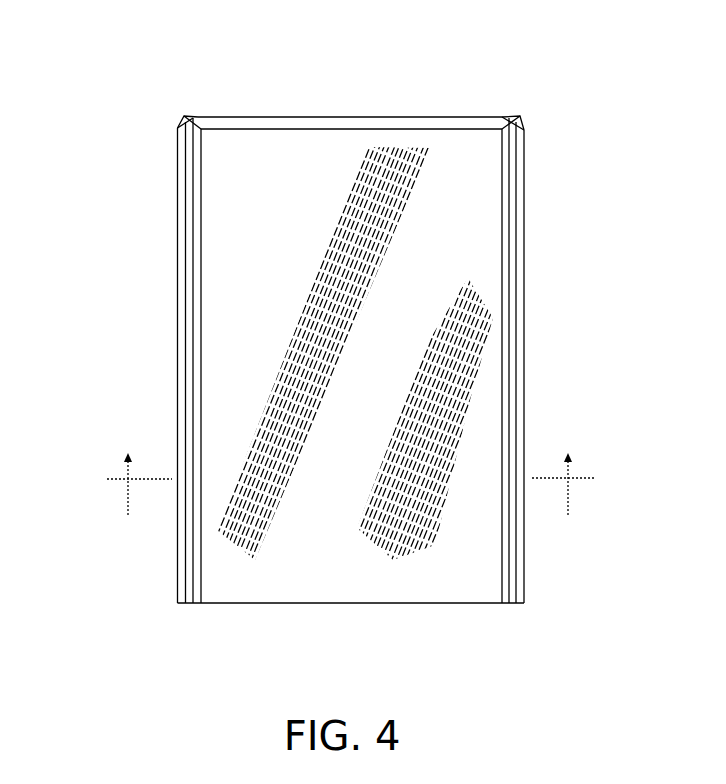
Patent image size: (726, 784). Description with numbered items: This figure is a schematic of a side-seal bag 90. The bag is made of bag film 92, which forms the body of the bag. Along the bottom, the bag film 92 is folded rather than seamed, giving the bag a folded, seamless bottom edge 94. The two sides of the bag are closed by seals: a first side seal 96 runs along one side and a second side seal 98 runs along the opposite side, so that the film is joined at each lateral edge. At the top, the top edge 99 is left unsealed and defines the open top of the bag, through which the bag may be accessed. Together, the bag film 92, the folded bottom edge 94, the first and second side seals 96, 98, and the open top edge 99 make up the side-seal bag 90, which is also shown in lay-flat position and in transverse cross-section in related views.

The side-seal bag 90 is at (322, 354).
The bag film 92 is at (492, 250).
The folded bottom edge 94 is at (253, 603).
The first side seal 96 is at (205, 323).
The second side seal 98 is at (495, 337).
The top edge 99 is at (478, 113).